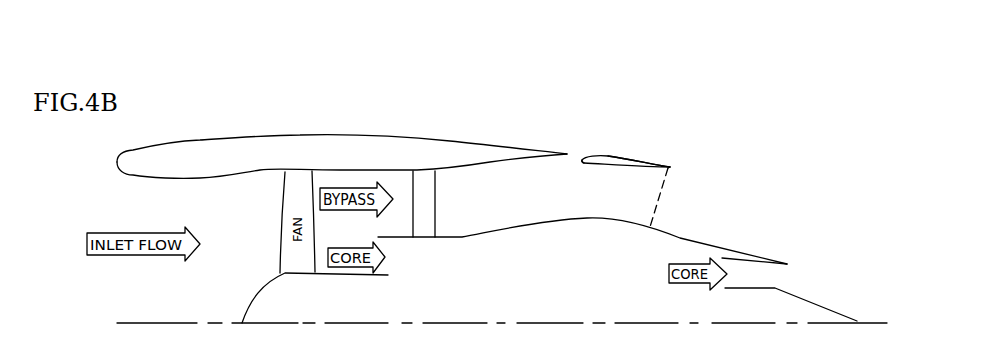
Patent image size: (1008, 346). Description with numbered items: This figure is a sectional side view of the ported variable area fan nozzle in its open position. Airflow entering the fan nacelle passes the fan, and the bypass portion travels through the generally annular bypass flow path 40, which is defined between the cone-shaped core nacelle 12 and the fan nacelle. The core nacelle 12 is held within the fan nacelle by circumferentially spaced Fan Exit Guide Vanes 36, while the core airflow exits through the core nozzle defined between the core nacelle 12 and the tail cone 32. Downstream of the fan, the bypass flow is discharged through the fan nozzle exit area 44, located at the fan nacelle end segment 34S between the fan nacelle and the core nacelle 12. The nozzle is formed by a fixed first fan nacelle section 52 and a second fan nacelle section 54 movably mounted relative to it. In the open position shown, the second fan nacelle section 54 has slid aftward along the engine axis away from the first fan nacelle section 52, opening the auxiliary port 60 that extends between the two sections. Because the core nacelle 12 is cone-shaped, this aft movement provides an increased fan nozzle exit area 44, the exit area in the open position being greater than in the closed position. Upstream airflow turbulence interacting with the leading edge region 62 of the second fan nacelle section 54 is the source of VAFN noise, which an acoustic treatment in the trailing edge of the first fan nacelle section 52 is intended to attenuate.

The core nacelle 12 is at (731, 246).
The tail cone 32 is at (815, 302).
The fan nacelle end segment 34S is at (668, 168).
The Fan Exit Guide Vanes 36 is at (435, 215).
The bypass flow path 40 is at (508, 225).
The fan nozzle exit area 44 is at (657, 205).
The first fan nacelle section 52 is at (481, 162).
The second fan nacelle section 54 is at (623, 155).
The auxiliary port 60 is at (575, 152).
The leading edge region 62 is at (582, 163).